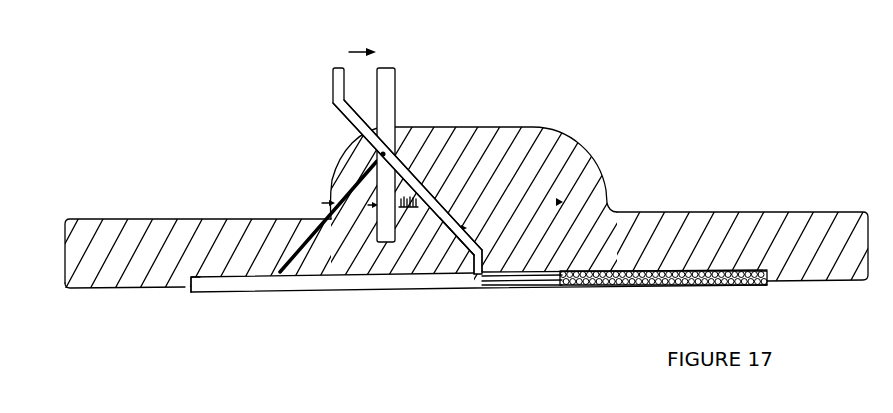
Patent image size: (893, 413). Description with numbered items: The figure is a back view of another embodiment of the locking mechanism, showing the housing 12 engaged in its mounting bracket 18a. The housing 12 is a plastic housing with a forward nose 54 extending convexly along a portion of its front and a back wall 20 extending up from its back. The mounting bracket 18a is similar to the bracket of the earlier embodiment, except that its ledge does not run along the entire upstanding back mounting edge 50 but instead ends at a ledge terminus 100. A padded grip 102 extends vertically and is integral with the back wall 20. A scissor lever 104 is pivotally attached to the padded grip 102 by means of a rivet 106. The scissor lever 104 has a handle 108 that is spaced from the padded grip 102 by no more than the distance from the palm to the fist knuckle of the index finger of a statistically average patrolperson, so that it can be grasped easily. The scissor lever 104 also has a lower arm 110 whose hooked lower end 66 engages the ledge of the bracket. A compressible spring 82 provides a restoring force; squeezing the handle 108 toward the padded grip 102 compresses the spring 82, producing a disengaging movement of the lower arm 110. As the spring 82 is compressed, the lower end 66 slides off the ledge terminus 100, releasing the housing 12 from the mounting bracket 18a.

The housing 12 is at (86, 217).
The back wall 20 is at (515, 165).
The upstanding back mounting edge 50 is at (292, 285).
The mounting bracket 18a is at (203, 292).
The lower end 66 is at (490, 288).
The forward nose 54 is at (525, 283).
The padded grip 102 is at (392, 96).
The handle 108 is at (333, 82).
The scissor lever 104 is at (345, 119).
The rivet 106 is at (375, 156).
The spring 82 is at (412, 208).
The lower arm 110 is at (449, 228).
The ledge terminus 100 is at (476, 284).